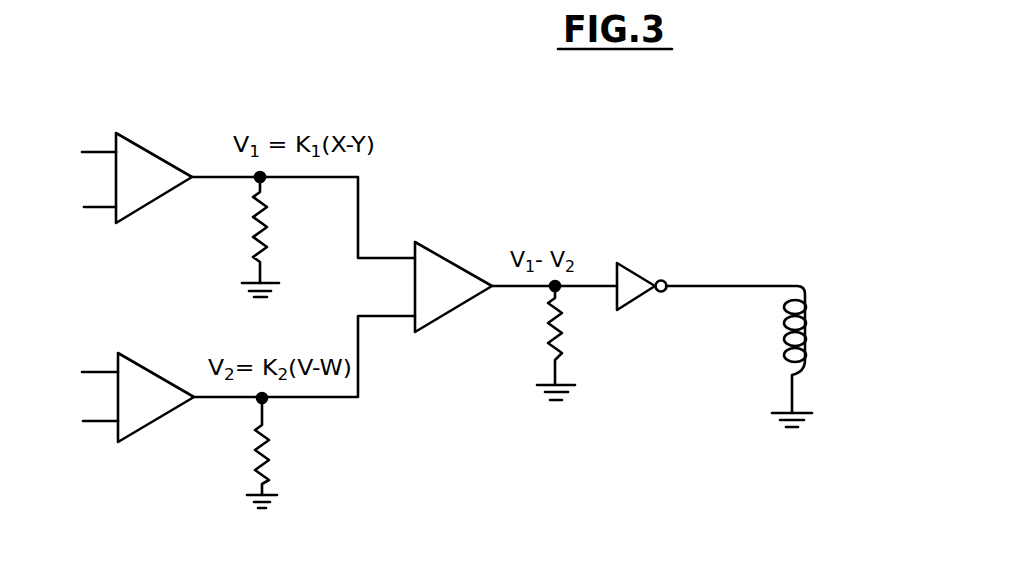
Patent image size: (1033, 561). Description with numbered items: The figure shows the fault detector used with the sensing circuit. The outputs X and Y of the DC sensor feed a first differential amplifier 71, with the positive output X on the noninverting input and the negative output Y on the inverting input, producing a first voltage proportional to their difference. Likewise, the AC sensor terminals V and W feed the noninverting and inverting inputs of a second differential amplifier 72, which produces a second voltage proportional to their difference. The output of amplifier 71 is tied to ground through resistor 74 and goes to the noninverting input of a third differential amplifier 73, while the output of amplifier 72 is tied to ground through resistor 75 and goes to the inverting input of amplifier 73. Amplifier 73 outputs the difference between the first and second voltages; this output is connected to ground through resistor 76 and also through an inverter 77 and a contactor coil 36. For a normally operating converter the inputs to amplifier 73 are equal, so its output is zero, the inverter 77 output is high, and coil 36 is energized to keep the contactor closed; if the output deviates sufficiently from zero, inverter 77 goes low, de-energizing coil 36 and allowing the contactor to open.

The first differential amplifier 71 is at (165, 160).
The differential amplifier 72 is at (150, 365).
The differential amplifier 73 is at (460, 265).
The resistor 74 is at (262, 228).
The resistor 75 is at (265, 452).
The resistor 76 is at (565, 345).
The inverter 77 is at (640, 292).
The contactor coil 36 is at (806, 348).